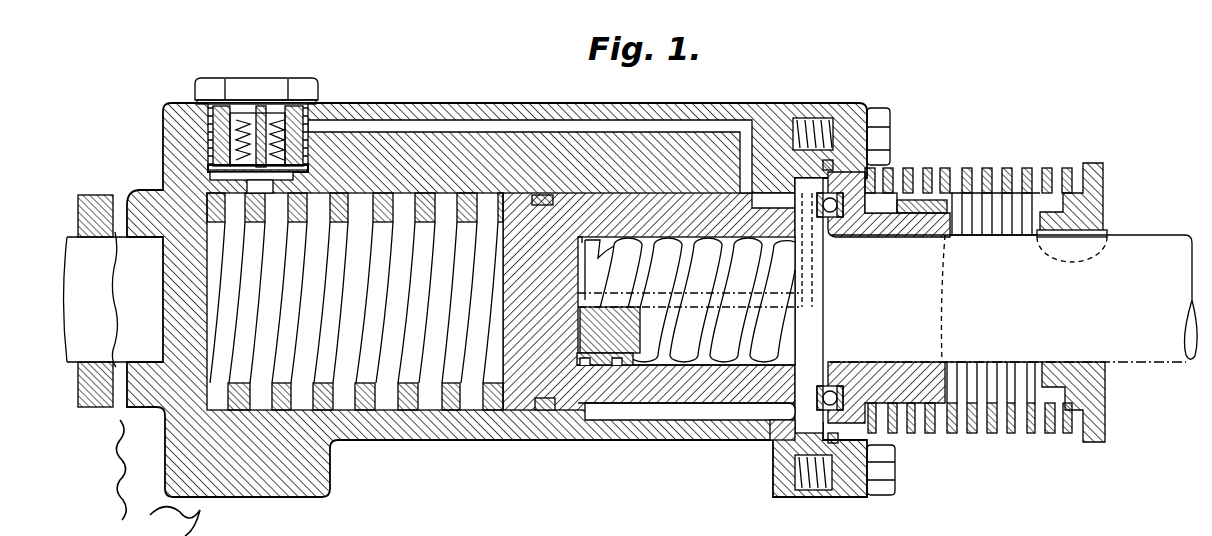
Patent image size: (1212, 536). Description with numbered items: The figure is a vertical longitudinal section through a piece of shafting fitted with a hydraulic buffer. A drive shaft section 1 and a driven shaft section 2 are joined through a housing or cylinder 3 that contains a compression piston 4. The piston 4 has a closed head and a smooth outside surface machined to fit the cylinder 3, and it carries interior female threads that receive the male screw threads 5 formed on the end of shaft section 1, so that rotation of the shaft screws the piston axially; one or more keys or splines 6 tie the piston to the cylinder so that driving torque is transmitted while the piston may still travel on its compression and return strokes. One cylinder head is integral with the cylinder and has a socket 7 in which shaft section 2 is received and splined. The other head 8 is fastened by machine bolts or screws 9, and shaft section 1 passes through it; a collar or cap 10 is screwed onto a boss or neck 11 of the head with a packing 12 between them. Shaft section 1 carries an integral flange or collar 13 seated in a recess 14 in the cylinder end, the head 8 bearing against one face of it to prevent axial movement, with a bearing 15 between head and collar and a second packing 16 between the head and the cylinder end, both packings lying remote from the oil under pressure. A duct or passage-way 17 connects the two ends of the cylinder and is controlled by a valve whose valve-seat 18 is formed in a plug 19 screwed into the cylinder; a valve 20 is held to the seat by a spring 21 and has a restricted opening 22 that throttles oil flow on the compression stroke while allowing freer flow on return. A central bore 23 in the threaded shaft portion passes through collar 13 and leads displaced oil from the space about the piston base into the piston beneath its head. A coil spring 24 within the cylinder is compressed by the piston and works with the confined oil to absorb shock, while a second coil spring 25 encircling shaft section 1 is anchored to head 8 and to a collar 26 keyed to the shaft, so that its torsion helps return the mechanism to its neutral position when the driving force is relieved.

The shaft section 1 is at (1160, 224).
The shaft section 2 is at (67, 235).
The housing or cylinder 3 is at (509, 196).
The compression piston 4 is at (592, 232).
The screw threads 5 is at (633, 243).
The keys or splines 6 is at (653, 413).
The socket 7 is at (153, 352).
The head 8 is at (860, 92).
The machine bolts or screws 9 is at (892, 132).
The collar or cap 10 is at (1003, 150).
The boss or neck 11 is at (880, 215).
The packing 12 is at (930, 200).
The flange or collar 13 is at (813, 418).
The recess 14 is at (830, 405).
The bearing 15 is at (843, 402).
The packing 16 is at (838, 440).
The duct or passage-way 17 is at (375, 126).
The valve-seat 18 is at (233, 138).
The plug 19 is at (312, 89).
The valve 20 is at (208, 170).
The spring 21 is at (208, 130).
The restricted opening 22 is at (258, 125).
The central bore 23 is at (580, 413).
The coil spring 24 is at (393, 190).
The coil spring 25 is at (1037, 173).
The collar 26 is at (1105, 192).